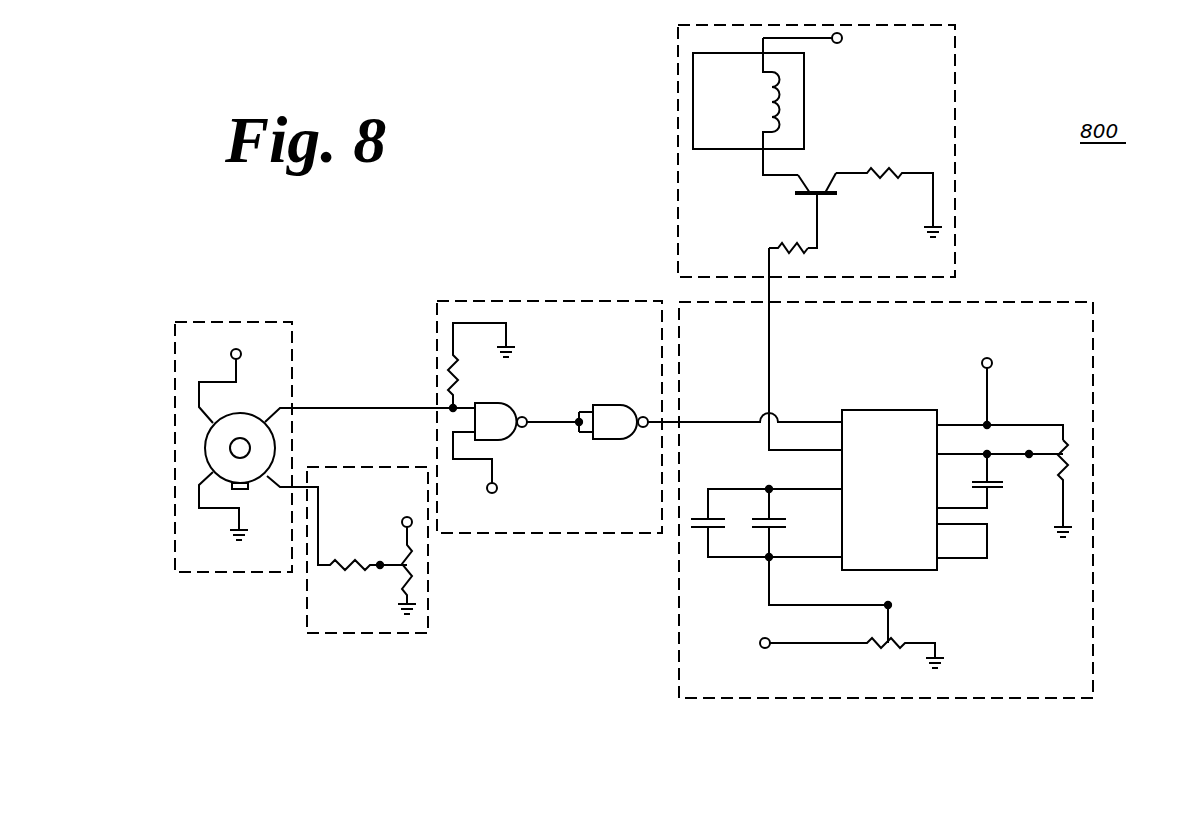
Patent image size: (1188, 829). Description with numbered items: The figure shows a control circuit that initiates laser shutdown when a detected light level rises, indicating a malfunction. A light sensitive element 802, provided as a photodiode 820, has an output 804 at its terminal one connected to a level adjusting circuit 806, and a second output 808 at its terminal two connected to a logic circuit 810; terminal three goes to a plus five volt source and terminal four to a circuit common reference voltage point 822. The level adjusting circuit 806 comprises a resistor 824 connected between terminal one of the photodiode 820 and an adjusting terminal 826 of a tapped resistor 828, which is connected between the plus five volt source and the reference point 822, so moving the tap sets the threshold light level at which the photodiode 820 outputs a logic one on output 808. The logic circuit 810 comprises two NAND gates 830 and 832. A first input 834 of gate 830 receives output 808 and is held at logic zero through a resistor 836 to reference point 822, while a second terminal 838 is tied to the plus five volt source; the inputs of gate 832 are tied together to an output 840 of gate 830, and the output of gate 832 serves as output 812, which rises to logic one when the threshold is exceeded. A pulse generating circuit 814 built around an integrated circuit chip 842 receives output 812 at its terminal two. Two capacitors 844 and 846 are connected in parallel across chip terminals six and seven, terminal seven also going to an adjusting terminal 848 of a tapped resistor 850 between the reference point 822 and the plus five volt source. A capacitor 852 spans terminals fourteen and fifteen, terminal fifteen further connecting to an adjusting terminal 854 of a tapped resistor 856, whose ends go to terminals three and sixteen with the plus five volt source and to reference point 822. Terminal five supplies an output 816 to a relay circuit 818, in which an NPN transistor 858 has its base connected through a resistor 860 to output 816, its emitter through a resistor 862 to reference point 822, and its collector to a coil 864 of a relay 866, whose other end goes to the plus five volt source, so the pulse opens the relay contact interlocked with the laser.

The light sensitive element 802 is at (245, 316).
The output 804 is at (298, 486).
The level adjusting circuit 806 is at (300, 611).
The second output 808 is at (298, 408).
The logic circuit 810 is at (507, 292).
The output 812 is at (672, 422).
The pulse generating circuit 814 is at (1098, 402).
The output 816 is at (767, 287).
The relay circuit 818 is at (674, 100).
The photodiode 820 is at (242, 413).
The circuit common reference voltage point 822 is at (236, 534).
The resistor 824 is at (358, 571).
The adjusting terminal 826 is at (380, 562).
The tapped resistor 828 is at (404, 584).
The NAND gate 830 is at (517, 403).
The NAND gate 832 is at (613, 405).
The first input 834 is at (470, 406).
The resistor 836 is at (455, 375).
The second terminal 838 is at (488, 458).
The output 840 is at (545, 422).
The integrated circuit chip 842 is at (893, 410).
The capacitor 844 is at (706, 518).
The capacitor 846 is at (775, 518).
The adjusting terminal 848 is at (890, 605).
The tapped resistor 850 is at (885, 646).
The capacitor 852 is at (990, 490).
The adjusting terminal 854 is at (1029, 454).
The tapped resistor 856 is at (1062, 468).
The NPN transistor 858 is at (805, 198).
The resistor 860 is at (799, 248).
The resistor 862 is at (890, 170).
The coil 864 is at (771, 88).
The relay 866 is at (808, 90).